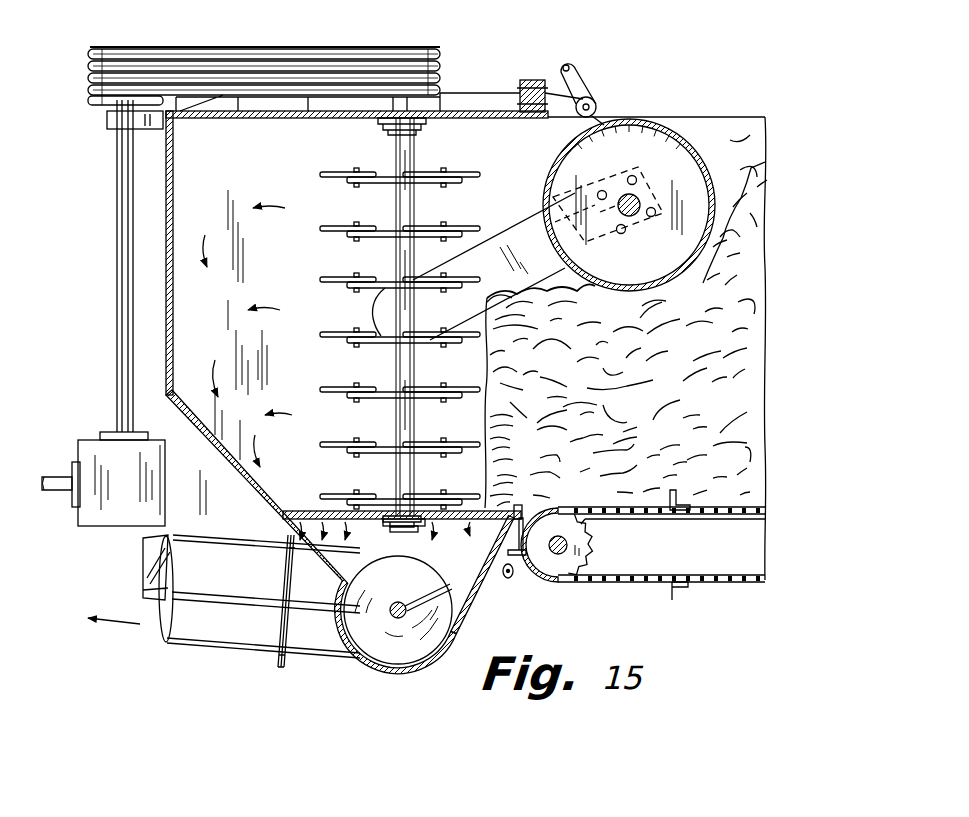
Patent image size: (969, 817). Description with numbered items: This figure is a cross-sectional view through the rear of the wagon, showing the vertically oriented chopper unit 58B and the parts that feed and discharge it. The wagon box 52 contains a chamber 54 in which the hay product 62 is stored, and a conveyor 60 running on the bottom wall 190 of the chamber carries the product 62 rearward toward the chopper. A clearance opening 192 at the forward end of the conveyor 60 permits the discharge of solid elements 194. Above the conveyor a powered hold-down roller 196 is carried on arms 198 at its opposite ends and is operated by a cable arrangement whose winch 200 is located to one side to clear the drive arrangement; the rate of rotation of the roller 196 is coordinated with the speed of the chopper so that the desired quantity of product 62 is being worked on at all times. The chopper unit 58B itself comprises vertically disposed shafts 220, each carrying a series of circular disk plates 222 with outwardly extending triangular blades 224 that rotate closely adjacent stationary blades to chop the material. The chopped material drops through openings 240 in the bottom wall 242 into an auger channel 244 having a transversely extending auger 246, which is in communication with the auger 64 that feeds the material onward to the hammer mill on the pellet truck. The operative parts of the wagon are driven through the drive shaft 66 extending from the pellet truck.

The box 52 is at (753, 120).
The chamber 54 is at (744, 164).
The vertically oriented chopper unit 58B is at (162, 238).
The conveyor 60 is at (767, 509).
The product 62 is at (742, 458).
The auger 64 is at (229, 645).
The drive shaft 66 is at (58, 472).
The bottom wall 190 is at (768, 530).
The clearance opening 192 is at (522, 512).
The solid elements 194 is at (513, 573).
The hold-down roller 196 is at (678, 122).
The arms 198 is at (508, 233).
The winch 200 is at (278, 100).
The vertically disposed shaft 220 is at (413, 148).
The circular disk plate 222 is at (380, 186).
The triangular blade 224 is at (336, 174).
The openings 240 is at (322, 511).
The bottom wall 242 is at (373, 529).
The auger channel 244 is at (456, 570).
The transversely extending auger 246 is at (382, 646).